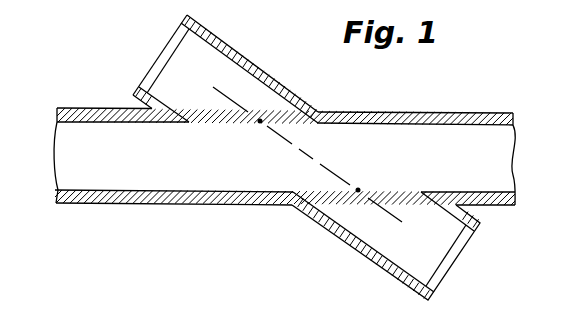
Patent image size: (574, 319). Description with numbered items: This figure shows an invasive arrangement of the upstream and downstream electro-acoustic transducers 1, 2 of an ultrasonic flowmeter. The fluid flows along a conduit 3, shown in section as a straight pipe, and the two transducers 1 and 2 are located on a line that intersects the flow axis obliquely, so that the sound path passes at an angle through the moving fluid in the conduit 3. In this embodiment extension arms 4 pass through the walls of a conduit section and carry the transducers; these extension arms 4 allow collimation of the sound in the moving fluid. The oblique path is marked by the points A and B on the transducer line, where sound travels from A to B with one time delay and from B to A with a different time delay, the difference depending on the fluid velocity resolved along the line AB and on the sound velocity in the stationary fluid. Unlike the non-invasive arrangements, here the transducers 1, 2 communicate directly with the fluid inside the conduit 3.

The electro-acoustic transducer 1 is at (223, 69).
The electro-acoustic transducer 2 is at (456, 261).
The conduit 3 is at (110, 108).
The extension arms 4 is at (262, 69).
The point A is at (258, 125).
The point B is at (362, 188).